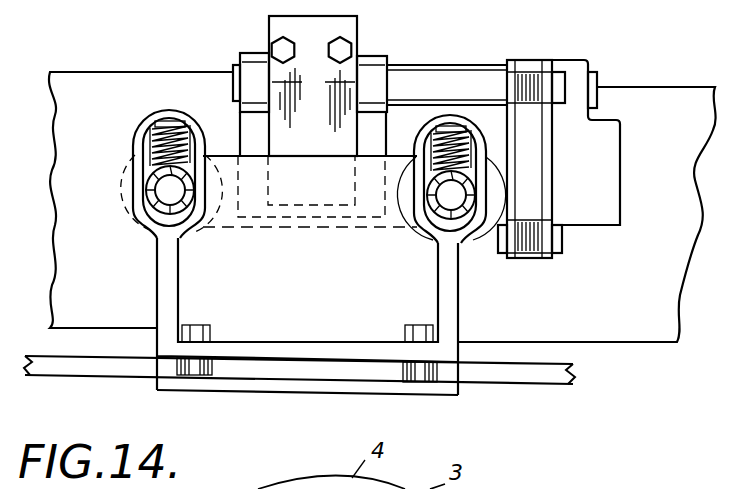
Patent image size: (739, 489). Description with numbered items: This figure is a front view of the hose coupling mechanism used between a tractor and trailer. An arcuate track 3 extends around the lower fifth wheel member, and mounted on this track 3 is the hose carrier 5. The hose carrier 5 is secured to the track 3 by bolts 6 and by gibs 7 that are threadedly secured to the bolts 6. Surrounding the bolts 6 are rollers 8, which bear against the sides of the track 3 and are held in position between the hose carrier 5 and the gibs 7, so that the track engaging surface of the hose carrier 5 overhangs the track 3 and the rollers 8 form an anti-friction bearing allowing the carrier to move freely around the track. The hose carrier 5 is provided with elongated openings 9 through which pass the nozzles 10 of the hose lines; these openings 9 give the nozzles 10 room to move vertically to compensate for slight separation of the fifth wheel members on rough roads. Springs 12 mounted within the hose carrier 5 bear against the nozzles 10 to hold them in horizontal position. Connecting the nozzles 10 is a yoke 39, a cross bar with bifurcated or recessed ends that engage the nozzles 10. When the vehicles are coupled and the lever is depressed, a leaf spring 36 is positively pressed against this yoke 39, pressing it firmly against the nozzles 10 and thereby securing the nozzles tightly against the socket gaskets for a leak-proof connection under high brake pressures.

The arcuate track 3 is at (565, 376).
The hose carrier 5 is at (428, 287).
The bolts 6 is at (197, 330).
The gibs 7 is at (348, 383).
The rollers 8 is at (200, 378).
The elongated openings 9 is at (157, 135).
The nozzles 10 is at (163, 207).
The springs 12 is at (176, 128).
The leaf spring 36 is at (333, 205).
The yoke 39 is at (228, 165).